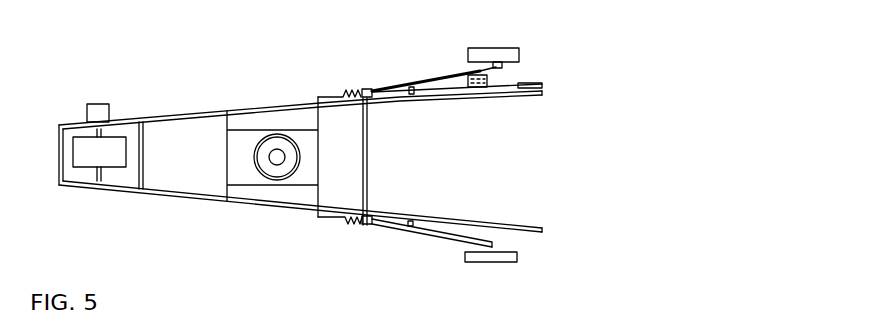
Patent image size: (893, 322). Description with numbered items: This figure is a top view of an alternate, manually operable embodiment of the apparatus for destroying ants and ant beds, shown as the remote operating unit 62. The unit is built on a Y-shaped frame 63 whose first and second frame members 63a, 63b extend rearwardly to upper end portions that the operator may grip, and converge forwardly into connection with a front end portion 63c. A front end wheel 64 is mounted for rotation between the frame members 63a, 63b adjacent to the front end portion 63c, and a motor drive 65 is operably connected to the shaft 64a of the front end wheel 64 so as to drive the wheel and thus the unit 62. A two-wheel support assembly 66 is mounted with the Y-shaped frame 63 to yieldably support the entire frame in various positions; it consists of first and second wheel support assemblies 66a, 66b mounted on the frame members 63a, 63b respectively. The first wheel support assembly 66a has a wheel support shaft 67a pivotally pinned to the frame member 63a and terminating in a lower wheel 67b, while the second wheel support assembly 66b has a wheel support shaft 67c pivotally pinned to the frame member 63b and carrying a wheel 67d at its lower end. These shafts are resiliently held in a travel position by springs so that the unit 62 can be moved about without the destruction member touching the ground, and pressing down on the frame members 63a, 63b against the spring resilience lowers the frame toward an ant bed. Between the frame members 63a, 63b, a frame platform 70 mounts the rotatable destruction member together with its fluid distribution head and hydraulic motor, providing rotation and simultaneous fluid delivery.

The remote operating unit 62 is at (572, 79).
The Y-shaped frame 63 is at (253, 108).
The first frame member 63a is at (157, 113).
The second frame member 63b is at (332, 218).
The front end portion 63c is at (59, 147).
The front end wheel 64 is at (80, 168).
The shaft 64a is at (102, 176).
The motor drive 65 is at (99, 104).
The two-wheel support assembly 66 is at (417, 80).
The first wheel support assembly 66a is at (382, 90).
The second wheel support assembly 66b is at (405, 230).
The wheel support shaft 67a is at (393, 83).
The lower wheel 67b is at (496, 68).
The wheel support shaft 67c is at (437, 238).
The wheel 67d is at (517, 255).
The frame platform 70 is at (293, 188).